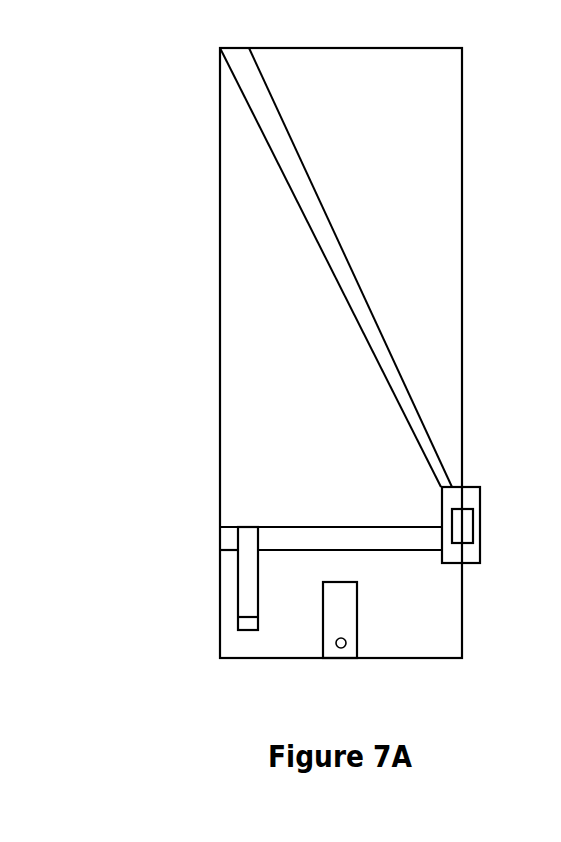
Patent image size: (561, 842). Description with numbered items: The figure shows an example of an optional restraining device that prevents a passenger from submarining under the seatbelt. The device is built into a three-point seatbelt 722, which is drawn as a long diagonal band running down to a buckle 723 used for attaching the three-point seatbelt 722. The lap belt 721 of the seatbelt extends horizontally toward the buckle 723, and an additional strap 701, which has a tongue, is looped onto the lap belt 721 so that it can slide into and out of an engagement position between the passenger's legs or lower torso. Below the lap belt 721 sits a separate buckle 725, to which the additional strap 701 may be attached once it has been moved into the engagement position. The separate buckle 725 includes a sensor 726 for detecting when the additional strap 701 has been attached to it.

The additional strap 701 is at (250, 585).
The lap belt 721 is at (228, 536).
The three-point seatbelt 722 is at (362, 338).
The buckle 723 is at (442, 513).
The separate buckle 725 is at (323, 628).
The sensor 726 is at (337, 648).